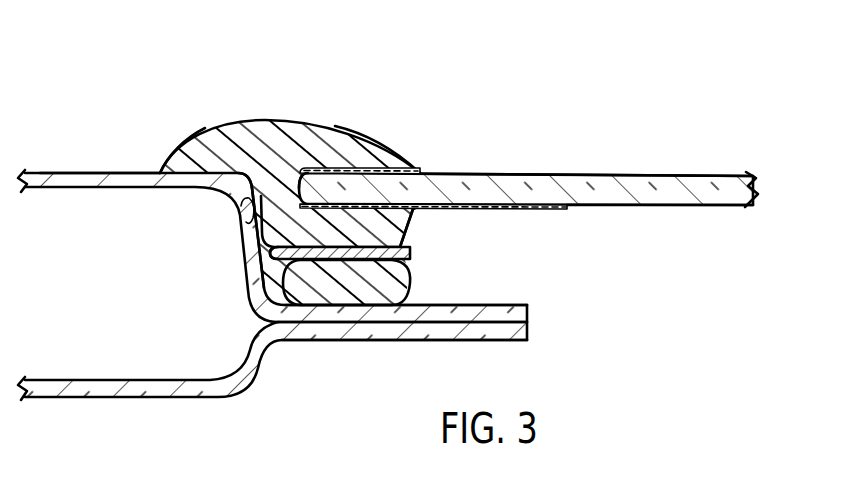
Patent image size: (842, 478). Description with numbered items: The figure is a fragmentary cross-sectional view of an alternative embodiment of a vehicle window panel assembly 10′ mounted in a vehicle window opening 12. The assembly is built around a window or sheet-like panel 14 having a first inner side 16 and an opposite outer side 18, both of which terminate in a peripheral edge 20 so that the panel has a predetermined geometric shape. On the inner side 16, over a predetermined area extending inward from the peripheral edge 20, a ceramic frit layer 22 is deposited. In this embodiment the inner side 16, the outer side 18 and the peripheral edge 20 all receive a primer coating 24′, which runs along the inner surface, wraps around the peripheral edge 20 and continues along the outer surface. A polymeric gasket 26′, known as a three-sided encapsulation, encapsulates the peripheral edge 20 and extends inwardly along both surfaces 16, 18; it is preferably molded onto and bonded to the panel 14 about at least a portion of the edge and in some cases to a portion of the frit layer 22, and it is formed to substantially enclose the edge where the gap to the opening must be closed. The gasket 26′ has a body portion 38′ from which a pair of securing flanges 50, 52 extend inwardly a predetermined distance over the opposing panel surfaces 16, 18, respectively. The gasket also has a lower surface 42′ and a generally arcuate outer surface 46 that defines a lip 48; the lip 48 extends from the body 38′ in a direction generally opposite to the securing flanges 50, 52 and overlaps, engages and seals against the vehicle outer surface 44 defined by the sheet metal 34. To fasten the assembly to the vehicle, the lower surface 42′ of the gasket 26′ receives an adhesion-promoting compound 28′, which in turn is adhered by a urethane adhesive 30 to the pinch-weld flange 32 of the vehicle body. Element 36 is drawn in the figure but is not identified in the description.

The vehicle window panel assembly 10′ is at (648, 101).
The vehicle window opening 12 is at (245, 203).
The sheet-like panel 14 is at (718, 171).
The first inner side 16 is at (690, 206).
The outer side 18 is at (672, 173).
The peripheral edge 20 is at (247, 165).
The ceramic frit layer 22 is at (537, 210).
The primer coating 24′ is at (397, 166).
The polymeric gasket 26′ is at (426, 231).
The adhesion-promoting compound 28′ is at (403, 252).
The urethane adhesive 30 is at (408, 283).
The pinch-weld flange 32 is at (530, 303).
The sheet metal 34 is at (58, 180).
The lower lead 36 is at (135, 386).
The body portion 38′ is at (280, 122).
The lower surface 42′ is at (300, 263).
The vehicle outer surface 44 is at (93, 173).
The arcuate outer surface 46 is at (335, 128).
The lip 48 is at (183, 163).
The securing flange 50 is at (363, 233).
The securing flange 52 is at (353, 146).